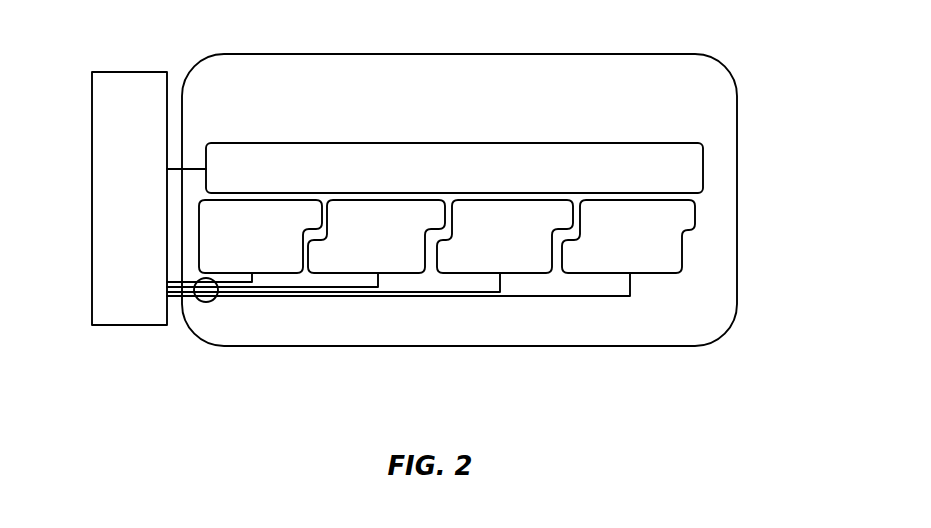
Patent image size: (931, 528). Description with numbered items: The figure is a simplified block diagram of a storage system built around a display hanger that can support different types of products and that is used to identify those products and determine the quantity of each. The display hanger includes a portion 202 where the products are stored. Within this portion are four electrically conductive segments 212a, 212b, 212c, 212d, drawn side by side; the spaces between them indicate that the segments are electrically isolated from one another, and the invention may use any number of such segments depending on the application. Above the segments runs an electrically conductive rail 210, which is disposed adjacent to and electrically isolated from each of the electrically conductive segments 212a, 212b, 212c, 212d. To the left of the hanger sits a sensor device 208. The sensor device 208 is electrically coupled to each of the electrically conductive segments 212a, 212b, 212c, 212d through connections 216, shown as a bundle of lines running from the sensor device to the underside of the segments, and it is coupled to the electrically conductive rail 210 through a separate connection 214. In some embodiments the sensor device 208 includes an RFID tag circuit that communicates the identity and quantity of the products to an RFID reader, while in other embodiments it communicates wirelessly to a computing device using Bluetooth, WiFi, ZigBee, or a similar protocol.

The portion of display hanger 202 is at (562, 53).
The sensor device 208 is at (120, 72).
The electrically conductive rail 210 is at (697, 142).
The electrically conductive segment 212a is at (278, 252).
The electrically conductive segment 212b is at (407, 255).
The electrically conductive segment 212c is at (537, 257).
The electrically conductive segment 212d is at (662, 257).
The connection 214 is at (192, 169).
The connections 216 is at (205, 302).